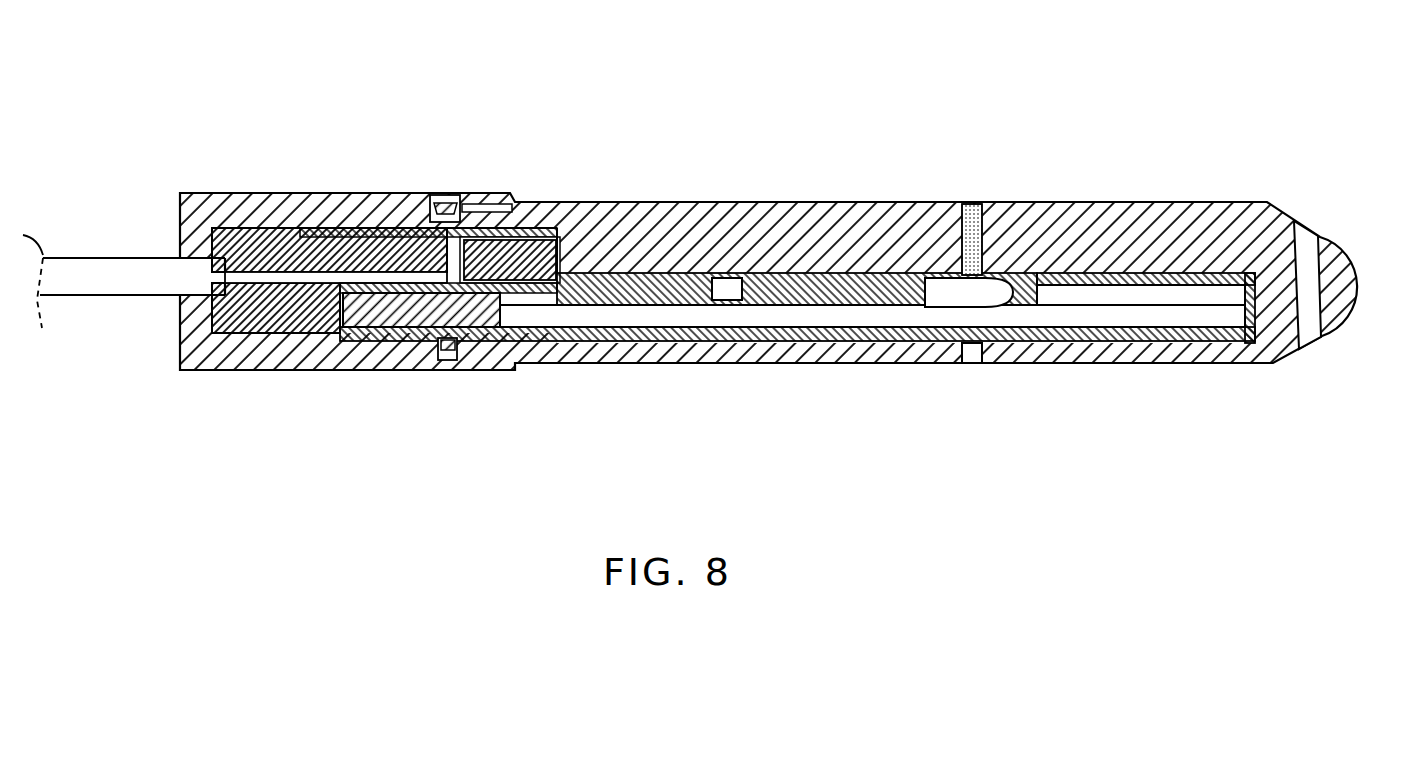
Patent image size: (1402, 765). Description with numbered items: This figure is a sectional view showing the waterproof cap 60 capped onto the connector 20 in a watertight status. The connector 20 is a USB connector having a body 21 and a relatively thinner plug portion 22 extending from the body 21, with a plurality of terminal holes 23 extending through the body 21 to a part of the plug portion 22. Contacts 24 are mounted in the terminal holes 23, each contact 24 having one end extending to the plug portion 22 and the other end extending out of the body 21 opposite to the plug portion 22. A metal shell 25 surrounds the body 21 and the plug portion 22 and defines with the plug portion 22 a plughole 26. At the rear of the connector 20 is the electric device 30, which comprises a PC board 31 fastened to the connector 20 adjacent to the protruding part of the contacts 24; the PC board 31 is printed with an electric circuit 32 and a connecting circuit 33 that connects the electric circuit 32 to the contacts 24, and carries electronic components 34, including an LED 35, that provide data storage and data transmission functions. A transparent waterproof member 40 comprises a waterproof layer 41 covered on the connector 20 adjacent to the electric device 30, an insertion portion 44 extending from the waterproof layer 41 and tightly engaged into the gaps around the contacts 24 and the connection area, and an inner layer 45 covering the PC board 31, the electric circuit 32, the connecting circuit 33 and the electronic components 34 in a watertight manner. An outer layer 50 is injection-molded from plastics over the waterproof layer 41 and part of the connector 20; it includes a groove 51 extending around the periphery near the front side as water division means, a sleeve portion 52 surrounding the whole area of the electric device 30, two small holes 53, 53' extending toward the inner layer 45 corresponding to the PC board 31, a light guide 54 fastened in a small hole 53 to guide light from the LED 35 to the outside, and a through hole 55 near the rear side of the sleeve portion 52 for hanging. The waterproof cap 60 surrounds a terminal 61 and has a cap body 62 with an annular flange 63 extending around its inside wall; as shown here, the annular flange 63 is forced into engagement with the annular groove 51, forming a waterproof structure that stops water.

The waterproof cap 60 is at (195, 193).
The cap body 62 is at (258, 193).
The terminal 61 is at (325, 212).
The plughole 26 is at (395, 200).
The metal shell 25 is at (422, 200).
The connector 20 is at (463, 200).
The terminal holes 23 is at (517, 196).
The waterproof layer 41 is at (555, 217).
The body 21 is at (595, 206).
The waterproof member 40 is at (647, 205).
The connecting circuit 33 is at (703, 203).
The electric circuit 32 is at (768, 272).
The LED 35 is at (943, 288).
The light guide 54 is at (975, 207).
The small hole 53 is at (1050, 163).
The electronic components 34 is at (1205, 297).
The through hole 55 is at (1310, 238).
The plug portion 22 is at (363, 365).
The contacts 24 is at (402, 363).
The annular flange 63 is at (468, 362).
The groove 51 is at (482, 362).
The insertion portion 44 is at (520, 363).
The outer layer 50 is at (577, 363).
The sleeve portion 52 is at (657, 345).
The electric device 30 is at (795, 342).
The PC board 31 is at (883, 320).
The small hole 53' is at (997, 391).
The inner layer 45 is at (1120, 352).